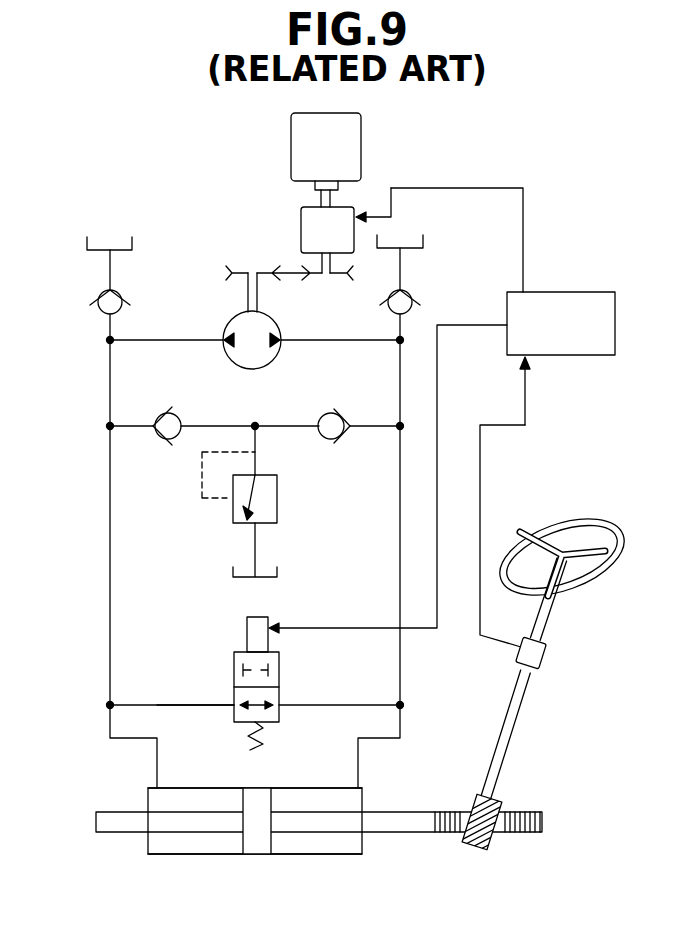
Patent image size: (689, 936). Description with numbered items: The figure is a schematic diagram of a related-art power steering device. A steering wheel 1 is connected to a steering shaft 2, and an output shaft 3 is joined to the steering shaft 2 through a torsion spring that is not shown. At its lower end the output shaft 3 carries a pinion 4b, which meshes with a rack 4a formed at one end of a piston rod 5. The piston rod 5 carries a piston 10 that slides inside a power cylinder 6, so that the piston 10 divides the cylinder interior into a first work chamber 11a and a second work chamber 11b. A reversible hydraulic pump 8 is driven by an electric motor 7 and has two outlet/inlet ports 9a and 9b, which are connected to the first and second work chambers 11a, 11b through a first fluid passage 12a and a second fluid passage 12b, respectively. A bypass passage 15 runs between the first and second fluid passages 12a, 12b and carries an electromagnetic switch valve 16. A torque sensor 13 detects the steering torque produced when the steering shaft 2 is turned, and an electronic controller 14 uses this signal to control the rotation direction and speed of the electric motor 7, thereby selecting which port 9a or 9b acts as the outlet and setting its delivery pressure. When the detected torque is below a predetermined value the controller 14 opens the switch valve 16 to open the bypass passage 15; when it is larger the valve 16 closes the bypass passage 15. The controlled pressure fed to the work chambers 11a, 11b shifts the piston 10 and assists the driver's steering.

The steering wheel 1 is at (569, 518).
The steering shaft 2 is at (553, 619).
The output shaft 3 is at (520, 732).
The rack 4a is at (532, 810).
The pinion 4b is at (496, 842).
The piston rod 5 is at (115, 834).
The power cylinder 6 is at (296, 856).
The electric motor 7 is at (362, 143).
The reversible hydraulic pump 8 is at (231, 324).
The outlet/inlet port 9a is at (228, 346).
The outlet/inlet port 9b is at (278, 346).
The piston 10 is at (258, 856).
The first work chamber 11a is at (182, 851).
The second work chamber 11b is at (338, 851).
The first fluid passage 12a is at (110, 608).
The second fluid passage 12b is at (402, 660).
The torque sensor 13 is at (548, 651).
The electronic controller 14 is at (583, 290).
The bypass passage 15 is at (174, 702).
The electromagnetic switch valve 16 is at (280, 672).